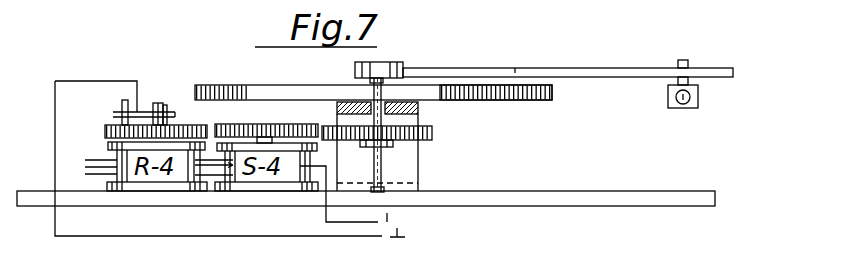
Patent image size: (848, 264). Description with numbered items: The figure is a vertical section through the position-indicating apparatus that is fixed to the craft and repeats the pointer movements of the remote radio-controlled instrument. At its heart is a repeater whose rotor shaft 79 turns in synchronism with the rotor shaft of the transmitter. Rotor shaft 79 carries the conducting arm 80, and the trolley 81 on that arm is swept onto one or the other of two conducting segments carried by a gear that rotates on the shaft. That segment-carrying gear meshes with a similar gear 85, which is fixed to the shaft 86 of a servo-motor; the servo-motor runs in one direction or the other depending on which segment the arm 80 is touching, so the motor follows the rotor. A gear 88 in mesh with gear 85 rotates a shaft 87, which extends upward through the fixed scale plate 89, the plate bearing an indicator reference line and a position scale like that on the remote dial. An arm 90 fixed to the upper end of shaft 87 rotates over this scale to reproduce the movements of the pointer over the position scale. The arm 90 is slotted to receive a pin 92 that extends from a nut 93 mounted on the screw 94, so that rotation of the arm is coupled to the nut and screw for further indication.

The rotor shaft 79 is at (153, 105).
The conducting arm 80 is at (175, 113).
The trolley 81 is at (123, 102).
The gear 85 is at (105, 131).
The shaft of the servo-motor 86 is at (280, 142).
The shaft 87 is at (383, 168).
The gear 88 is at (437, 136).
The fixed scale plate 89 is at (552, 93).
The arm 90 is at (497, 72).
The pin 92 is at (688, 64).
The nut 93 is at (690, 97).
The screw 94 is at (682, 97).